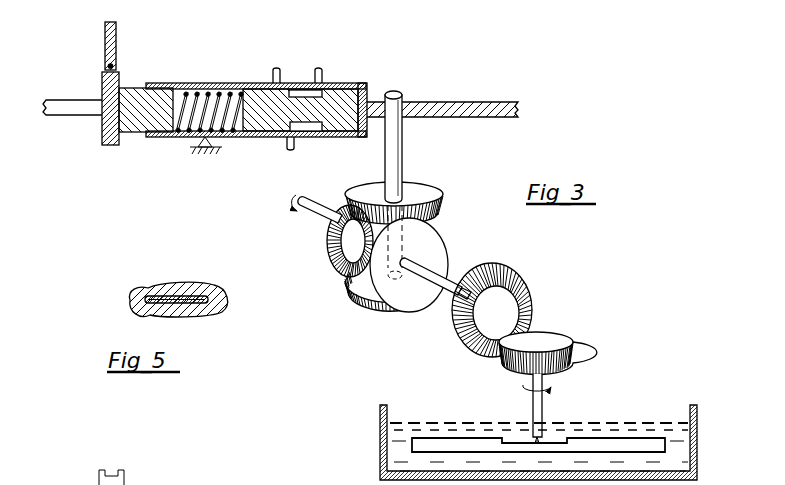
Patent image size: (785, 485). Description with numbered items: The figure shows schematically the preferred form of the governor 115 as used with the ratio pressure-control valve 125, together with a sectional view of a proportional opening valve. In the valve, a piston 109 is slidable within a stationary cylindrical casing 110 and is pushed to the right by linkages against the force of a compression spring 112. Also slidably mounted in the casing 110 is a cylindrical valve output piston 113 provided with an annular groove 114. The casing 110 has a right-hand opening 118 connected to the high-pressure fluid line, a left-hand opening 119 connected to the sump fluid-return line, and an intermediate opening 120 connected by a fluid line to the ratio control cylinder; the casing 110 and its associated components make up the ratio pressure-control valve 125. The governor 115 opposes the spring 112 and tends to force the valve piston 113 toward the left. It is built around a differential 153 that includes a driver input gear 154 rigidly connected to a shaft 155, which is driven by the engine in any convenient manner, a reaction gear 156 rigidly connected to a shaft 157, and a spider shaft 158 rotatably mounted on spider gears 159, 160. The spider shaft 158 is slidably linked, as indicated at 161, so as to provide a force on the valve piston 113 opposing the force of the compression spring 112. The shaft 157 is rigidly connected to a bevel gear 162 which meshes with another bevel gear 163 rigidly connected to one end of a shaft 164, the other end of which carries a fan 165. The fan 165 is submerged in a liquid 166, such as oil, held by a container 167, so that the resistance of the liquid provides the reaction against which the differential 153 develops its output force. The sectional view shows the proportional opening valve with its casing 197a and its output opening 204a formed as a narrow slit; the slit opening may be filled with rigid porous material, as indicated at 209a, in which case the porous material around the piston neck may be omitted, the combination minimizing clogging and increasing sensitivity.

In FIG. 3, the piston 109 is at (127, 88).
In FIG. 3, the stationary cylindrical casing 110 is at (170, 83).
In FIG. 3, the compression spring 112 is at (176, 131).
In FIG. 3, the cylindrical valve output piston 113 is at (364, 90).
In FIG. 3, the annular groove 114 is at (322, 135).
In FIG. 3, the governor 115 is at (465, 168).
In FIG. 3, the right-hand opening 118 is at (321, 71).
In FIG. 3, the left-hand opening 119 is at (273, 72).
In FIG. 3, the intermediate opening 120 is at (288, 148).
In FIG. 3, the ratio pressure-control valve 125 is at (215, 55).
In FIG. 3, the differential 153 is at (320, 275).
In FIG. 3, the driver input gear 154 is at (328, 247).
In FIG. 3, the shaft 155 is at (325, 210).
In FIG. 3, the reaction gear 156 is at (407, 305).
In FIG. 3, the shaft 157 is at (455, 275).
In FIG. 3, the spider shaft 158 is at (396, 142).
In FIG. 3, the spider gear 159 is at (443, 192).
In FIG. 3, the spider gear 160 is at (357, 305).
In FIG. 3, the slidable link 161 is at (403, 102).
In FIG. 3, the bevel gear 162 is at (528, 287).
In FIG. 3, the bevel gear 163 is at (570, 333).
In FIG. 3, the shaft 164 is at (530, 394).
In FIG. 3, the fan 165 is at (443, 445).
In FIG. 3, the liquid 166 is at (620, 430).
In FIG. 3, the container 167 is at (380, 427).
In FIG. 5, the casing 197a is at (152, 287).
In FIG. 5, the output opening 204a is at (187, 297).
In FIG. 5, the porous material 209a is at (180, 303).